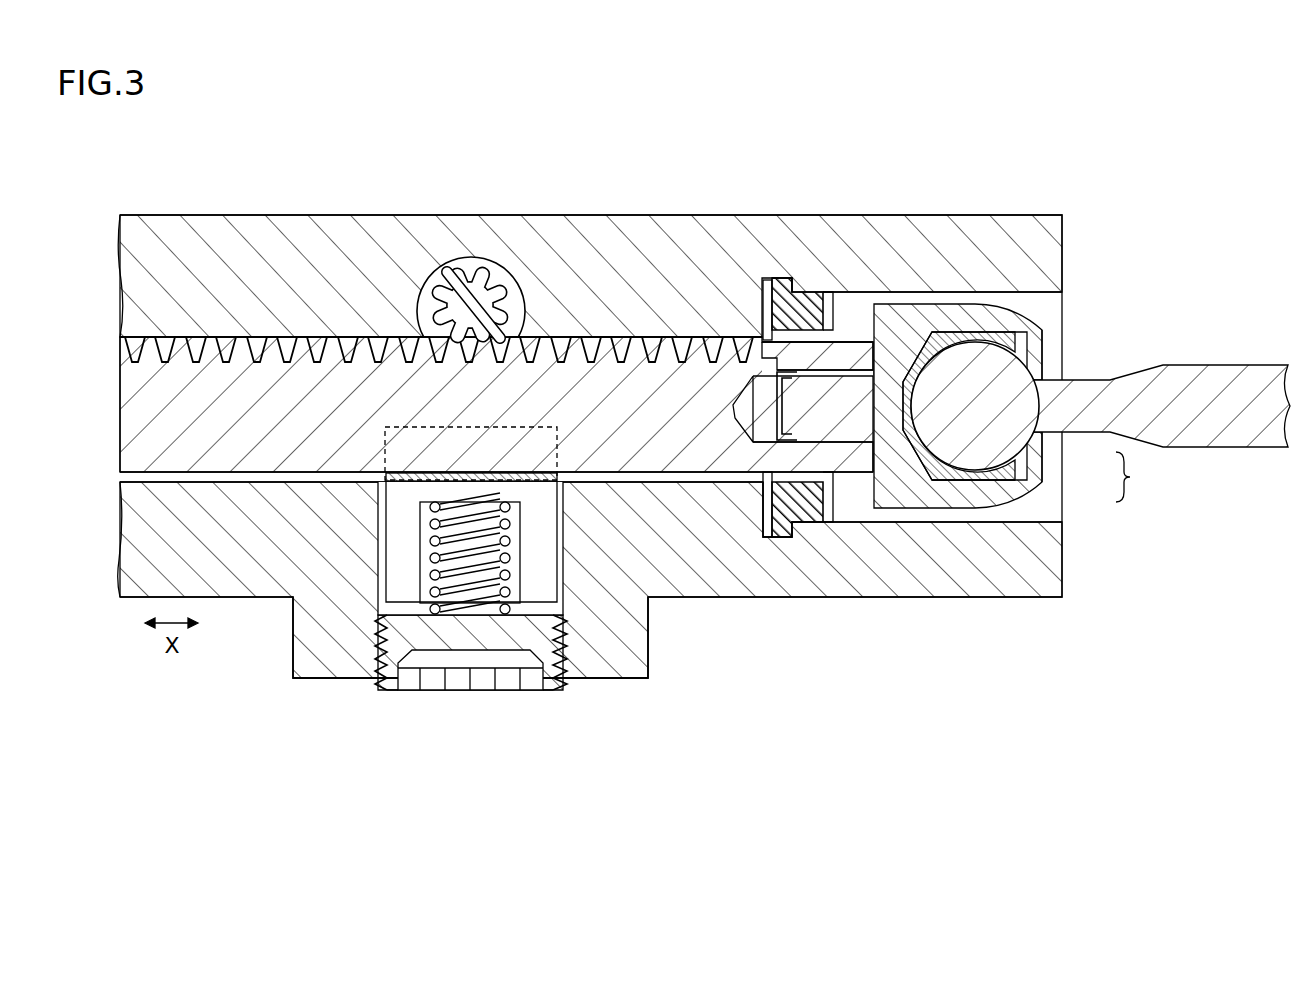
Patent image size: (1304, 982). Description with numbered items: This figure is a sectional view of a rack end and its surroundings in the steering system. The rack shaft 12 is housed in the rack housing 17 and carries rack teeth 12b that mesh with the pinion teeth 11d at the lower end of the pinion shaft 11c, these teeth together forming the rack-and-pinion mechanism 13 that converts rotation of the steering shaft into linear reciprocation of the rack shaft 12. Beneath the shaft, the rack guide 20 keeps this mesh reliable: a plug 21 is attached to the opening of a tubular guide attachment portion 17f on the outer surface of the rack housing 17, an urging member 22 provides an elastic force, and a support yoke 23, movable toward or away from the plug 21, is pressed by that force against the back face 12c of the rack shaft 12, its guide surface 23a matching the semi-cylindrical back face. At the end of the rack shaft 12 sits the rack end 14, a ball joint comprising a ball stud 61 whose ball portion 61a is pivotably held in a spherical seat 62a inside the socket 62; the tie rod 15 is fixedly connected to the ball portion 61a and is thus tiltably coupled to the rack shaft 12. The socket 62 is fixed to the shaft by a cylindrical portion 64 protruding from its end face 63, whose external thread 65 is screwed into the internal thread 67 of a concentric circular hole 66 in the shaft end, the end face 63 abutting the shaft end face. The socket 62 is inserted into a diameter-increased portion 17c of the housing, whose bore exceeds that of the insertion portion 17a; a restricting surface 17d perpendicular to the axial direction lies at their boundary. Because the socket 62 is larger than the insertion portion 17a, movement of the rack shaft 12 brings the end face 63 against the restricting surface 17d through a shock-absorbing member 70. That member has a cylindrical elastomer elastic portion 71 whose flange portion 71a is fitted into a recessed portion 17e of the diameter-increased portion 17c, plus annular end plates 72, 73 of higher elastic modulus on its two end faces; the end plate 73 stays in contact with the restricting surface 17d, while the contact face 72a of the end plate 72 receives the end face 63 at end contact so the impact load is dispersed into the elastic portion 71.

The pinion shaft 11c is at (468, 258).
The pinion teeth 11d is at (402, 350).
The rack shaft 12 is at (463, 390).
The rack teeth 12b is at (128, 336).
The back face 12c is at (130, 472).
The rack-and-pinion mechanism 13 is at (536, 303).
The rack end 14 is at (1016, 432).
The tie rod 15 is at (1247, 444).
The rack housing 17 is at (548, 220).
The insertion portion 17a is at (130, 482).
The diameter-increased portion 17c is at (1050, 294).
The restricting surface 17d is at (768, 540).
The recessed portion 17e is at (788, 540).
The tubular guide attachment portion 17f is at (293, 650).
The rack guide 20 is at (533, 559).
The plug 21 is at (498, 682).
The urging member 22 is at (540, 592).
The support yoke 23 is at (560, 562).
The guide surface 23a is at (468, 498).
The ball stud 61 is at (1045, 435).
The ball portion 61a is at (1043, 345).
The socket 62 is at (1038, 497).
The spherical seat 62a is at (965, 507).
The end face 63 is at (865, 496).
The cylindrical portion 64 is at (812, 525).
The external thread 65 is at (850, 368).
The circular hole 66 is at (745, 430).
The internal thread 67 is at (800, 440).
The shock-absorbing member 70 is at (832, 247).
The elastic portion 71 is at (776, 279).
The flange portion 71a is at (790, 291).
The end plate 72 is at (827, 294).
The contact face 72a is at (845, 310).
The end plate 73 is at (765, 279).